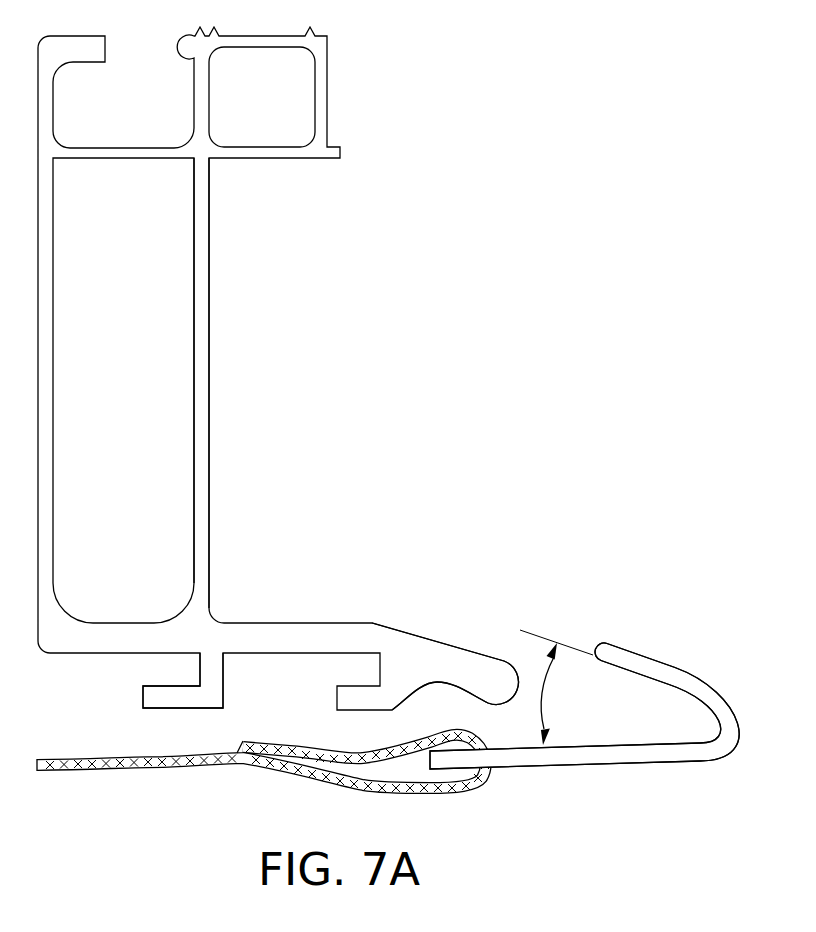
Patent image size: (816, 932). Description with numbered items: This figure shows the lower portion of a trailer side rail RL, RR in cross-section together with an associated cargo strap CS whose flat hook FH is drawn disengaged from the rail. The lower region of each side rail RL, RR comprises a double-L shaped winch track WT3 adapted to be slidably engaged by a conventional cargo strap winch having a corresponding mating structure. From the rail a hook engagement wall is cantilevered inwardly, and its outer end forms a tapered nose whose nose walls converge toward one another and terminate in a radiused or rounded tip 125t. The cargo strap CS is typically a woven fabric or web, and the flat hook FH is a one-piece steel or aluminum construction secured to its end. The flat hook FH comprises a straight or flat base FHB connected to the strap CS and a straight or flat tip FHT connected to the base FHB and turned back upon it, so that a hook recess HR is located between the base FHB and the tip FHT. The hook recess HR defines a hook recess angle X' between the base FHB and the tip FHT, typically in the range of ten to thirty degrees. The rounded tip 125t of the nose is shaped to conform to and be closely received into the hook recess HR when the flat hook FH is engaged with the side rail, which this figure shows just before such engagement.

The right side rail RR is at (278, 368).
The left side rail RL is at (216, 364).
The winch track WT3 is at (164, 660).
The rounded tip 125t is at (493, 678).
The tip of flat hook FHT is at (610, 648).
The hook recess HR is at (690, 705).
The base of flat hook FHB is at (583, 769).
The flat hook FH is at (584, 707).
The hook recess angle X' is at (561, 687).
The cargo strap CS is at (90, 771).